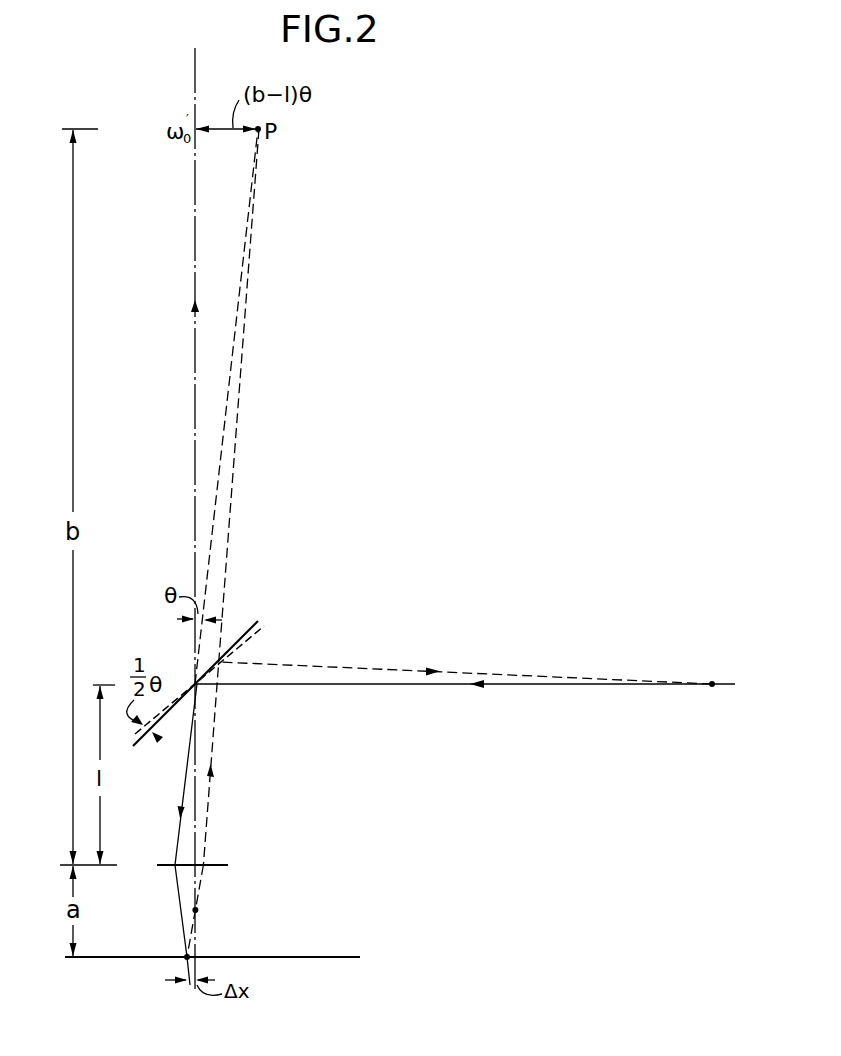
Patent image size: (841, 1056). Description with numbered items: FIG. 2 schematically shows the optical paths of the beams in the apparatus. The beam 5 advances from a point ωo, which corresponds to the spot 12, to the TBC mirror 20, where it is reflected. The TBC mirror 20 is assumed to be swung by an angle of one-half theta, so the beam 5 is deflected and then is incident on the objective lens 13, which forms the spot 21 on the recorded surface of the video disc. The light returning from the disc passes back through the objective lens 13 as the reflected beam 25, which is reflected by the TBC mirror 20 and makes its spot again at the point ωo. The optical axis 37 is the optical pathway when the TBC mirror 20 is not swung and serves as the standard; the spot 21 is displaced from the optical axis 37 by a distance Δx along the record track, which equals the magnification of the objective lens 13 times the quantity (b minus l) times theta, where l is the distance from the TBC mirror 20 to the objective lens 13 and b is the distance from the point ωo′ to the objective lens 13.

The beam 5 is at (506, 686).
The spot 12 is at (712, 683).
The objective lens 13 is at (223, 864).
The TBC mirror 20 is at (250, 625).
The spot 21 is at (185, 959).
The reflected beam 25 is at (346, 667).
The optical axis 37 is at (193, 505).